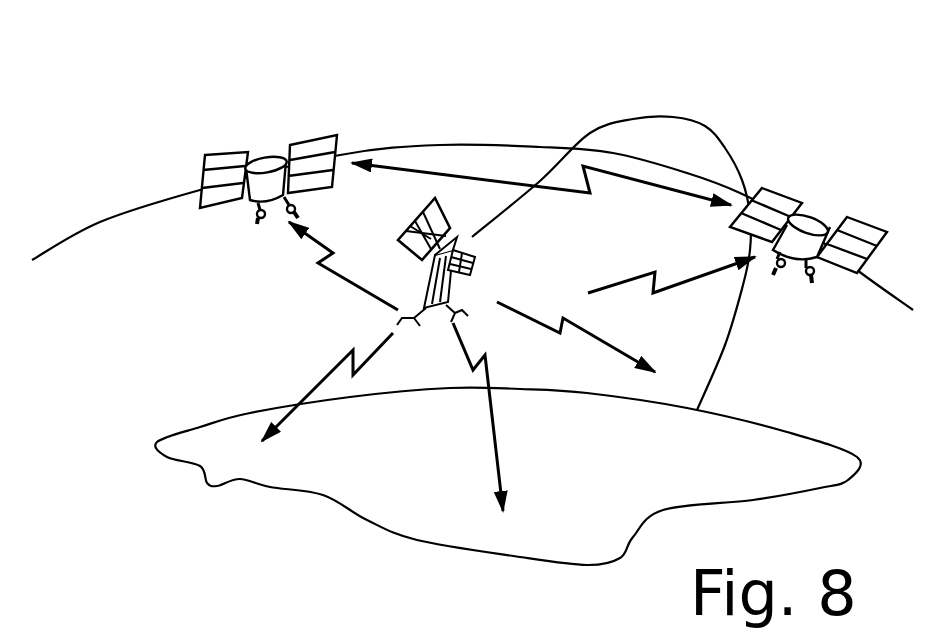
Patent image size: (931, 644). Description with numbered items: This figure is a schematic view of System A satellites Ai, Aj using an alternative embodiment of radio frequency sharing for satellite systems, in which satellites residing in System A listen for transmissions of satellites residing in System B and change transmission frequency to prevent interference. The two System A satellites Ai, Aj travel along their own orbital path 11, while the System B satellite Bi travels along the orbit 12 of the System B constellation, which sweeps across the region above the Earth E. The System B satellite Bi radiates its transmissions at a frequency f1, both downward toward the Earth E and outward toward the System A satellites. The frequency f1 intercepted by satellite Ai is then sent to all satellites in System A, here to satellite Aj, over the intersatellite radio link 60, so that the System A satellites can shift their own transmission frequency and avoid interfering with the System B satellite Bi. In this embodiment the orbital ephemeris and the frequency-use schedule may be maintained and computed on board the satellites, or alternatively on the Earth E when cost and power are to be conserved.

The jth satellite in System A constellation Aj is at (276, 158).
The ith satellite in System A constellation Ai is at (830, 217).
The ith satellite in System B constellation Bi is at (447, 220).
The first orbit 11 is at (708, 160).
The orbit of constellation or System B satellites 12 is at (633, 119).
The intersatellite radio link 60 is at (490, 183).
The first frequency used by satellites f1 is at (490, 413).
The Earth E is at (813, 457).